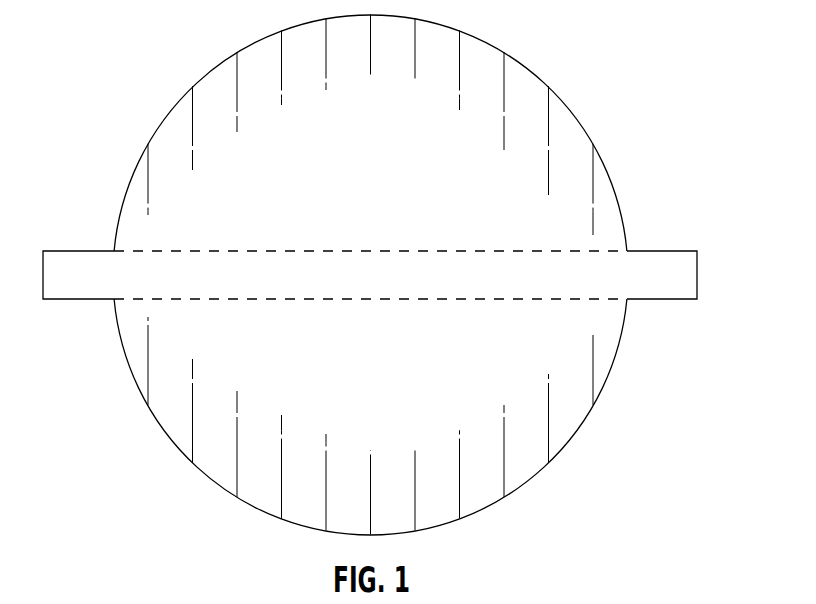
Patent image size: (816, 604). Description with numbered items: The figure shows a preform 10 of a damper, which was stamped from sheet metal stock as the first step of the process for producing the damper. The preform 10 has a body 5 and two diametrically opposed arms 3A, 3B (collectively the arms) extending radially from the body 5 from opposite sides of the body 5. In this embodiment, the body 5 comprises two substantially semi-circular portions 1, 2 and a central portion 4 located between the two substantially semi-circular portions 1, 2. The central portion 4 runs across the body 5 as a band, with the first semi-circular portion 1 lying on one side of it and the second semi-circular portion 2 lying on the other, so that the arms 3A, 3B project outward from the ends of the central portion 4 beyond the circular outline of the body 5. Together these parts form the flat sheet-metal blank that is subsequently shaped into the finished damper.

The substantially semi-circular portion 1 is at (182, 125).
The substantially semi-circular portion 2 is at (228, 440).
The arm 3A is at (73, 262).
The arm 3B is at (665, 263).
The central portion 4 is at (366, 278).
The body 5 is at (636, 427).
The preform 10 is at (397, 275).